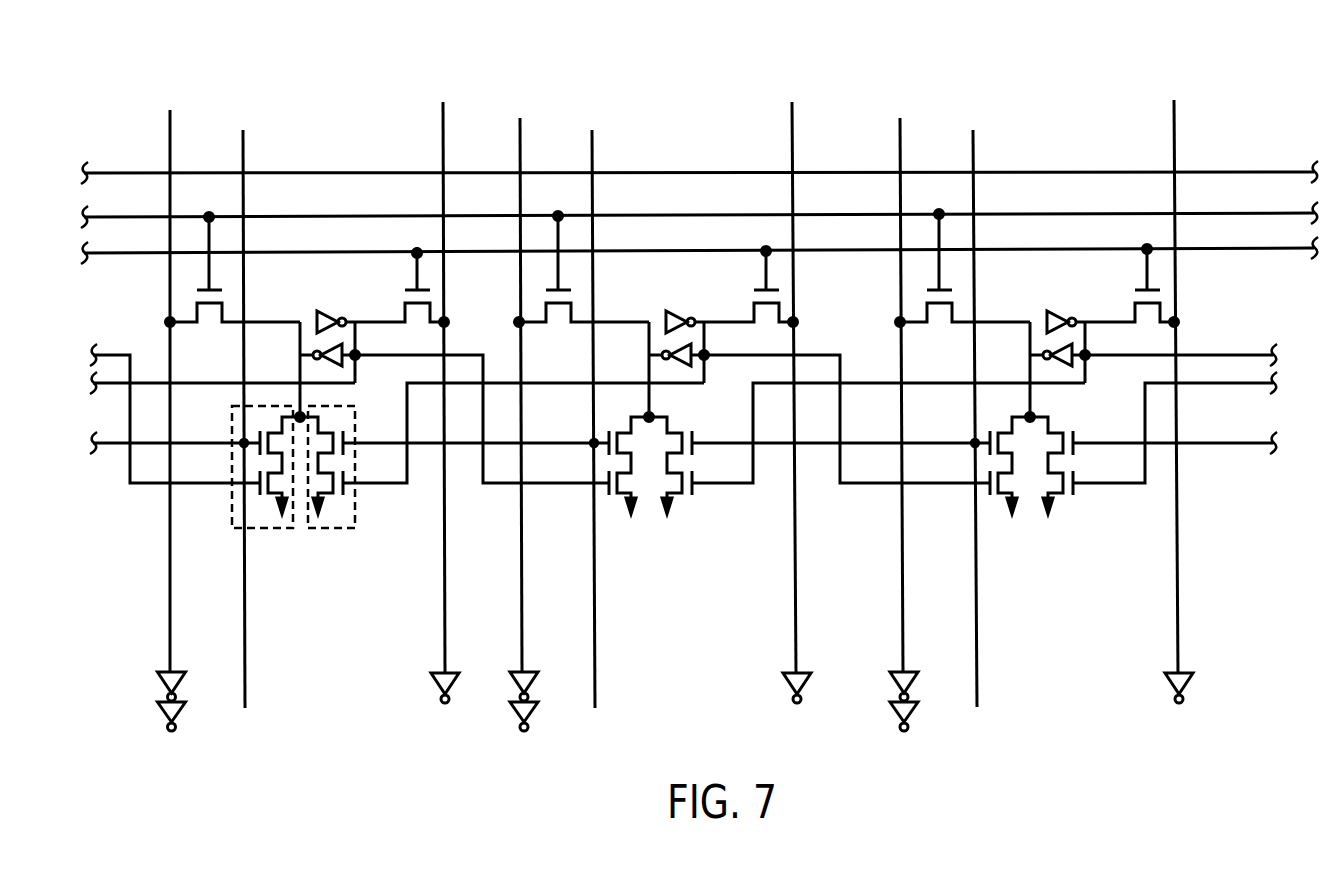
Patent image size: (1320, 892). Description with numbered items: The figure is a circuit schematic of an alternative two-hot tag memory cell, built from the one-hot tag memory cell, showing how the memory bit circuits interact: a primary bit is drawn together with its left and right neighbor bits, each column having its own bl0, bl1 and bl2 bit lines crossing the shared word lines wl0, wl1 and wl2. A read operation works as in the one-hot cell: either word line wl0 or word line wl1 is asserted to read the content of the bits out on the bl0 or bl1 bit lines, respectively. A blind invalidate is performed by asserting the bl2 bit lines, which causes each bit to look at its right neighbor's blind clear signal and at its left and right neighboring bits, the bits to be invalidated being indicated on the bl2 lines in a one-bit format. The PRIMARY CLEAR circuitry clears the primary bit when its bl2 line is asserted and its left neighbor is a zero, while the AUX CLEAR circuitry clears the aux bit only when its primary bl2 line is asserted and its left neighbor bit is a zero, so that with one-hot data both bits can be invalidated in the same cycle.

The word line wl0 is at (699, 244).
The word line wl1 is at (699, 208).
The word line wl2 is at (699, 164).
The primary clear PRIMARY CLEAR is at (283, 510).
The aux clear AUX CLEAR is at (355, 517).